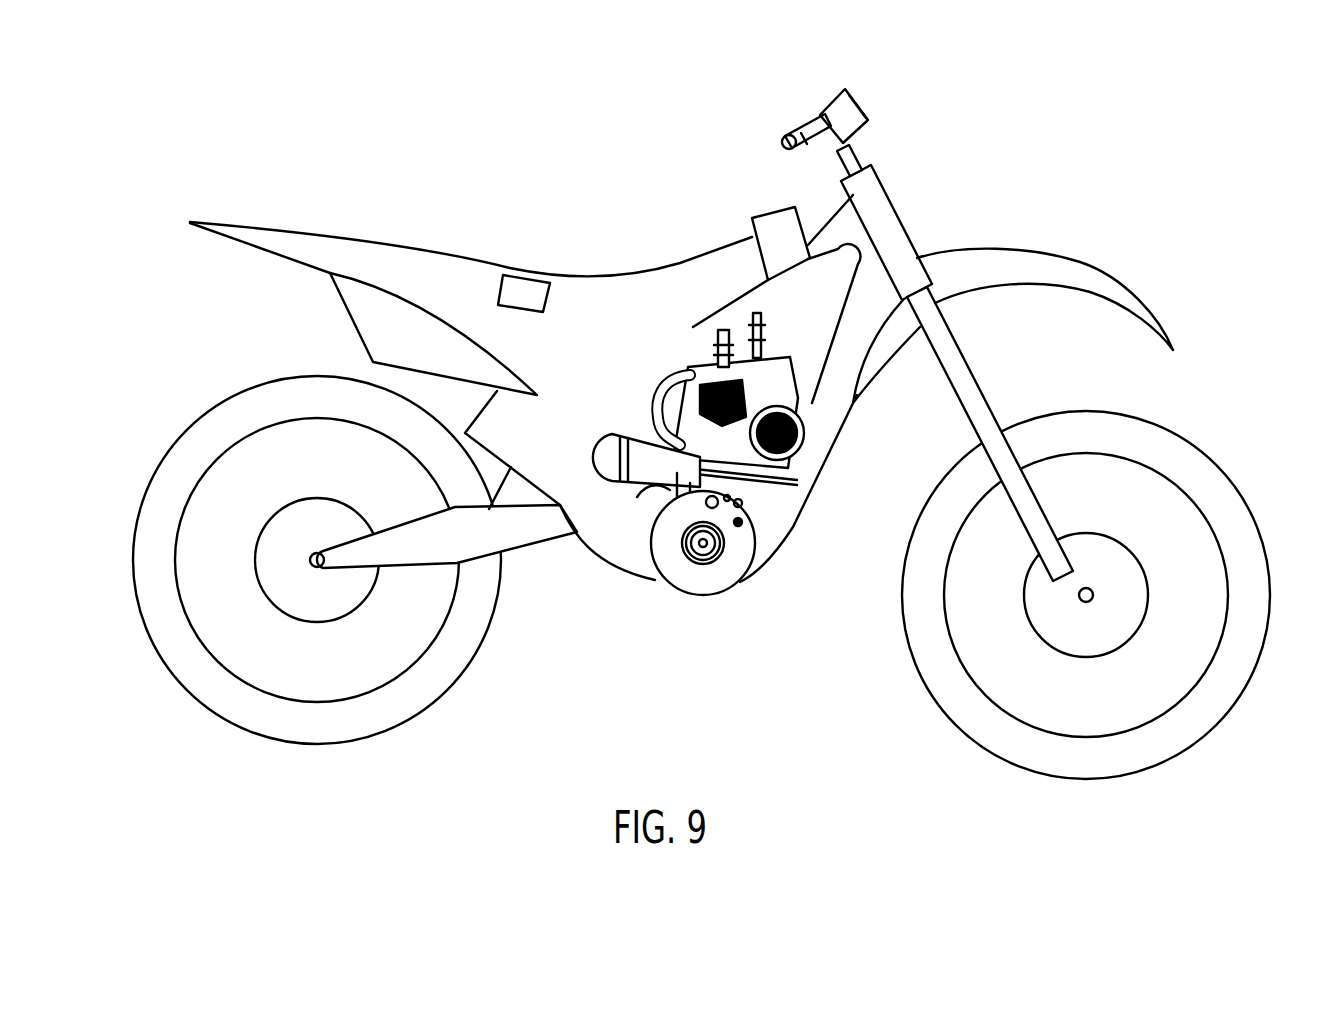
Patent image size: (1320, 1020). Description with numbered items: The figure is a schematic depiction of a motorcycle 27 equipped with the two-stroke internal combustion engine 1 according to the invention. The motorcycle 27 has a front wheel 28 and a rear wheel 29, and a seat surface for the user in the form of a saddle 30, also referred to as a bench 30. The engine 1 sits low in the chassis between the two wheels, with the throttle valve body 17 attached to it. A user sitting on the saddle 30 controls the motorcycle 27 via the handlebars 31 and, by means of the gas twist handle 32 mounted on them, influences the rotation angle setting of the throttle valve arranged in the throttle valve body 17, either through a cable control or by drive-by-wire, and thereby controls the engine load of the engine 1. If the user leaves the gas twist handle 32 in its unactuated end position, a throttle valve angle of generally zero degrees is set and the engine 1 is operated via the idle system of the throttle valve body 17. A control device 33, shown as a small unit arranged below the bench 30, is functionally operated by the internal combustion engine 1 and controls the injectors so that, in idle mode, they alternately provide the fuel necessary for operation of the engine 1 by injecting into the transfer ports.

The two-stroke internal combustion engine 1 is at (698, 502).
The throttle valve body 17 is at (625, 506).
The motorcycle 27 is at (701, 432).
The front wheel 28 is at (978, 730).
The rear wheel 29 is at (422, 699).
The saddle 30 is at (558, 272).
The handlebars 31 is at (821, 122).
The gas twist handle 32 is at (805, 150).
The control device 33 is at (503, 276).